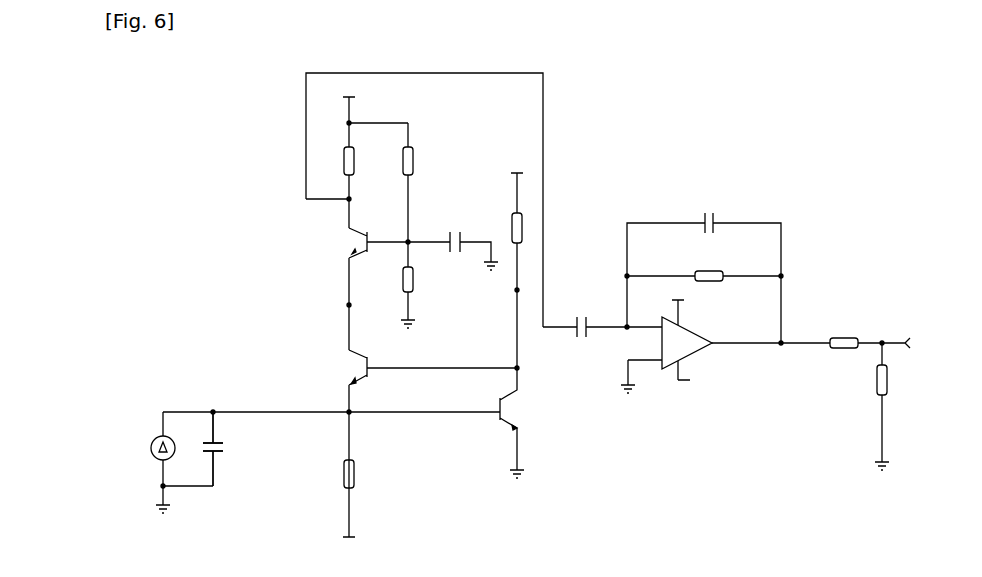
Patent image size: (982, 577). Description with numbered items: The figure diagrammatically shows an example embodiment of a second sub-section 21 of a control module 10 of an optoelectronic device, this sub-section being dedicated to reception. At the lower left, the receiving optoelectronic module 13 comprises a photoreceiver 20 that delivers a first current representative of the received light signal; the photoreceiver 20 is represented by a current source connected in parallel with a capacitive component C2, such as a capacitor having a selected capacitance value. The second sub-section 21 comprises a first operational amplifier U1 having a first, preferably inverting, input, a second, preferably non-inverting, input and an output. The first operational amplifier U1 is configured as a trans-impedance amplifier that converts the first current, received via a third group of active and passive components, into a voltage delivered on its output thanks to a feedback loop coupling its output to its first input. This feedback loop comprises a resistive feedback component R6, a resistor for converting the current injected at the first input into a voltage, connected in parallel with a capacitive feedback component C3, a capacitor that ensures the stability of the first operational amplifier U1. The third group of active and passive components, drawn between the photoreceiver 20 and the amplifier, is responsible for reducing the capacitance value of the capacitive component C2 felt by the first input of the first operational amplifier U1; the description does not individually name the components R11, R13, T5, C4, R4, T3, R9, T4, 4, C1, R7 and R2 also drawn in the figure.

The resistor R11 is at (345, 158).
The resistor R13 is at (413, 157).
The transistor T5 is at (355, 243).
The capacitor C4 is at (460, 235).
The resistor R4 is at (413, 278).
The transistor T3 is at (353, 370).
The resistor R9 is at (521, 228).
The transistor T4 is at (500, 420).
The resistor / current setting element 4 is at (353, 477).
The receiving optoelectronic module 13 is at (185, 461).
The photoreceiver 20 is at (155, 468).
The capacitive component C2 is at (220, 452).
The capacitor C1 is at (577, 340).
The second sub-section 21 is at (771, 266).
The control module 10 is at (771, 266).
The capacitive feedback component C3 is at (705, 223).
The resistive feedback component R6 is at (718, 280).
The first operational amplifier U1 is at (703, 350).
The resistor R7 is at (843, 350).
The resistor R2 is at (888, 380).